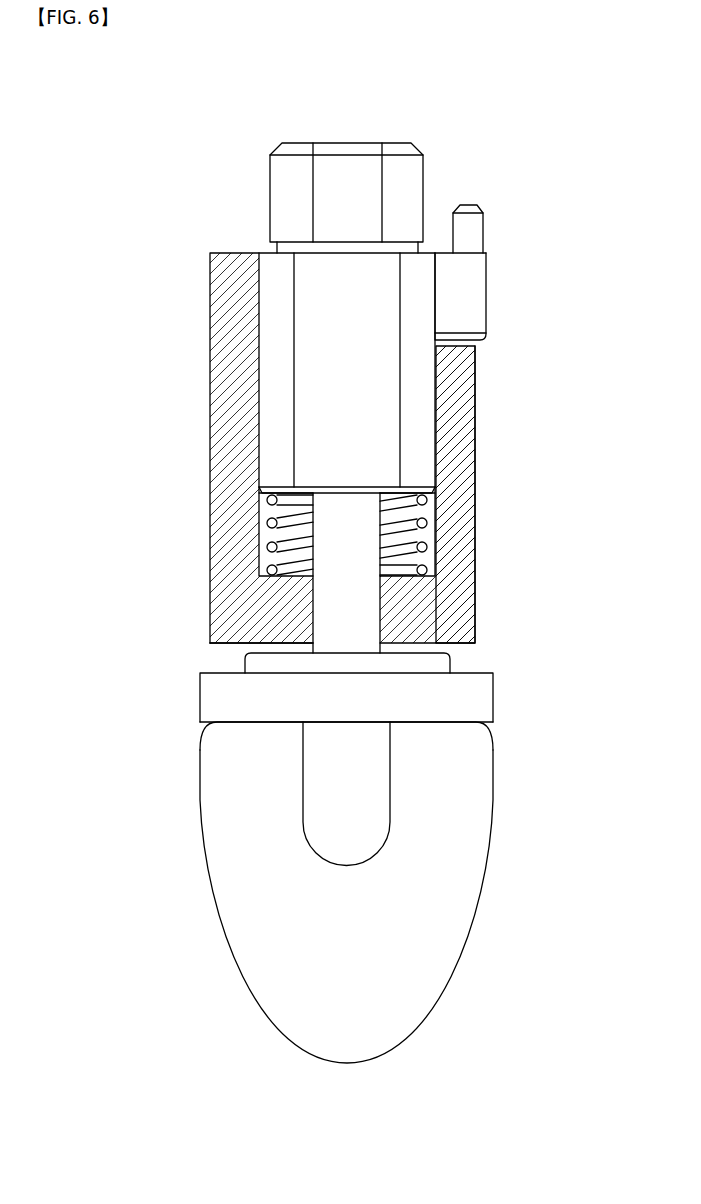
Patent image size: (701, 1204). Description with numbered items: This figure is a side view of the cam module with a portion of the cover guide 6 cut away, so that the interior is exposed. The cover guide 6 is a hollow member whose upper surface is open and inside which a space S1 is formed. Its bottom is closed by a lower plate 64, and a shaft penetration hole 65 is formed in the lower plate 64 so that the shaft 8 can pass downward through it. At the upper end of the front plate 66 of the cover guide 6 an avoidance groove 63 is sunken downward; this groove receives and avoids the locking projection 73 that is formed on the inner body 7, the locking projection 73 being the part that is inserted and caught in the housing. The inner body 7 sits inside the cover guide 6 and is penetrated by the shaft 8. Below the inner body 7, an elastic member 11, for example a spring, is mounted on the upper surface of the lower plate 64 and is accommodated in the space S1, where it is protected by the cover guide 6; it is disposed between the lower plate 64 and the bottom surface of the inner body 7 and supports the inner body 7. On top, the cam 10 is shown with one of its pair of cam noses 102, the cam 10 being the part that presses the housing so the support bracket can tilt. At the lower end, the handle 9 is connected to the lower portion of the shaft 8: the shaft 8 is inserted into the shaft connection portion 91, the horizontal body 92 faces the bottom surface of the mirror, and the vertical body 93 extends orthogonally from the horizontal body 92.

The cover guide 6 is at (353, 463).
The inner body 7 is at (275, 338).
The shaft 8 is at (352, 517).
The handle 9 is at (379, 858).
The cam 10 is at (401, 143).
The elastic member 11 is at (428, 544).
The avoidance groove 63 is at (457, 343).
The lower plate 64 is at (270, 623).
The shaft penetration hole 65 is at (303, 603).
The front plate 66 is at (460, 368).
The locking projection 73 is at (467, 218).
The shaft connection portion 91 is at (322, 748).
The horizontal body 92 is at (432, 693).
The vertical body 93 is at (457, 817).
The cam nose 102 is at (342, 175).
The space S1 is at (290, 535).